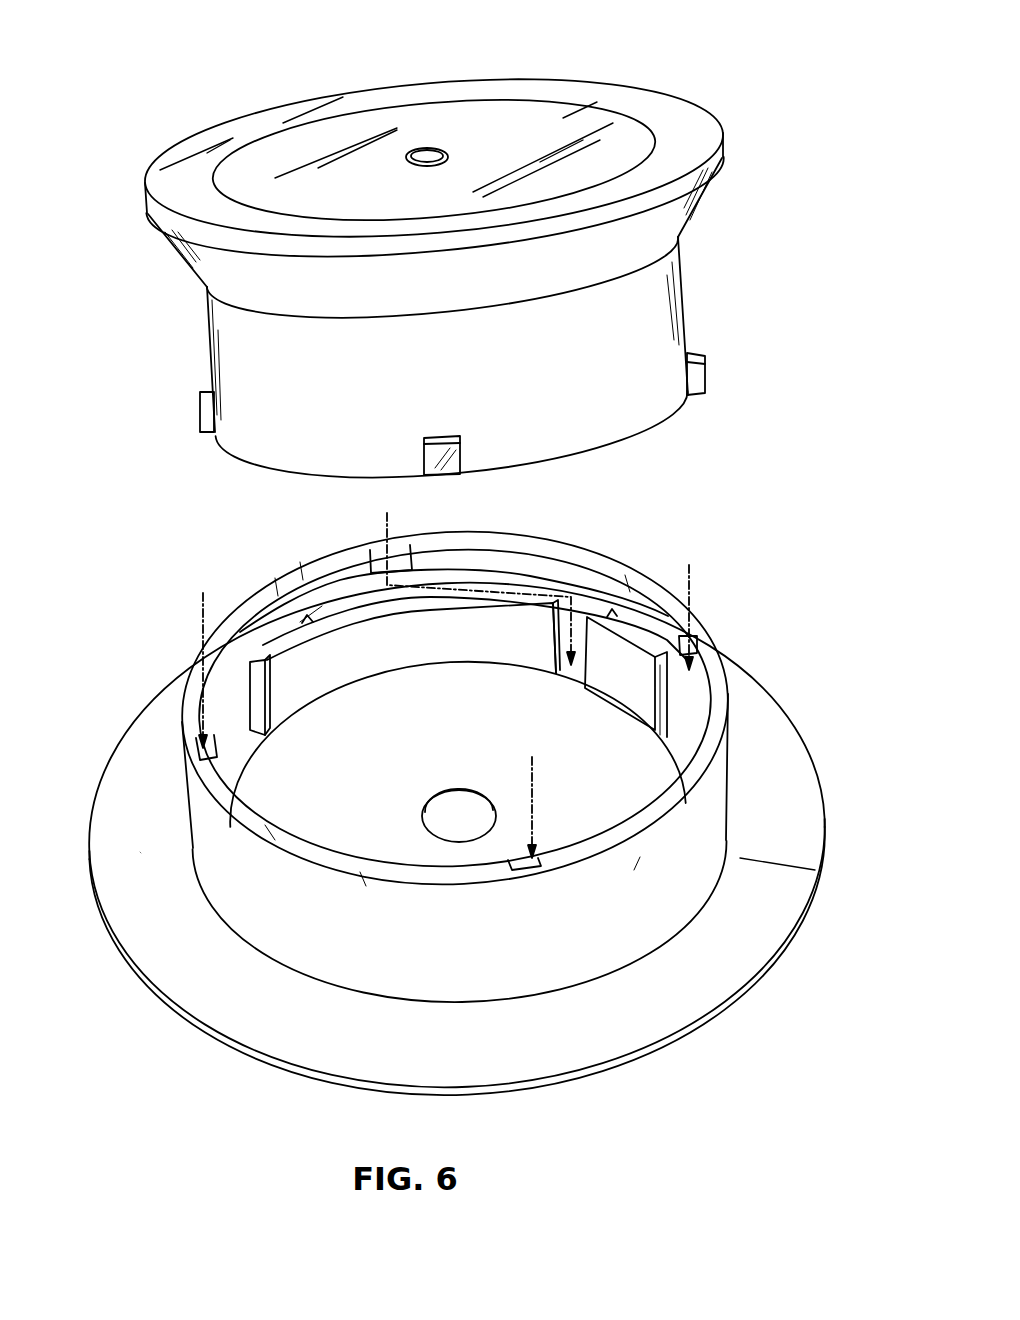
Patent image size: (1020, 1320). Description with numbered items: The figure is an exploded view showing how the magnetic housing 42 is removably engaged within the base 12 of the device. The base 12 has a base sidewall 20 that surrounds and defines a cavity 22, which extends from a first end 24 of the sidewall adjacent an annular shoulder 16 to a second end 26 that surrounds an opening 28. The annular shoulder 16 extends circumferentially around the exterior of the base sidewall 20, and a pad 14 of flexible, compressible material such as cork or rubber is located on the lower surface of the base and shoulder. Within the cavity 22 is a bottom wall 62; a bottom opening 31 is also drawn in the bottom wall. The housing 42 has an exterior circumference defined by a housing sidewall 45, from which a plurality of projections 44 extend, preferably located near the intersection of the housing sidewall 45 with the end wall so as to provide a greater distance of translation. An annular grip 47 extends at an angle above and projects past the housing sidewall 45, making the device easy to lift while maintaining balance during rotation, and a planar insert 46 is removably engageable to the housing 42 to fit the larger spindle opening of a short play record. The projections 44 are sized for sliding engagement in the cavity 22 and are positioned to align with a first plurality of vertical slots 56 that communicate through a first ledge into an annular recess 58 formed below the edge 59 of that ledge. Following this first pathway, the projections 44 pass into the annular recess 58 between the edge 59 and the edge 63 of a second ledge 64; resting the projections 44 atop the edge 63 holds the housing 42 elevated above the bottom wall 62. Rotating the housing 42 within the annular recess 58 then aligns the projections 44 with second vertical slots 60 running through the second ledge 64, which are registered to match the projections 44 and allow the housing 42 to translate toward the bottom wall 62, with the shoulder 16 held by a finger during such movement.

The base 12 is at (708, 551).
The pad 14 is at (345, 1080).
The annular shoulder 16 is at (142, 852).
The base sidewall 20 is at (190, 665).
The cavity 22 is at (457, 690).
The first end 24 is at (220, 916).
The second end 26 is at (736, 694).
The opening 28 is at (684, 720).
The opening 31 is at (442, 815).
The housing 42 is at (734, 250).
The projections 44 is at (704, 353).
The housing sidewall 45 is at (283, 407).
The insert 46 is at (565, 118).
The grip 47 is at (275, 284).
The first plurality of vertical slots 56 is at (378, 550).
The annular recess 58 is at (322, 605).
The edge of first ledge 59 is at (535, 558).
The second vertical slots 60 is at (583, 630).
The bottom wall 62 is at (440, 746).
The edge of second ledge 63 is at (309, 626).
The second ledge 64 is at (617, 680).